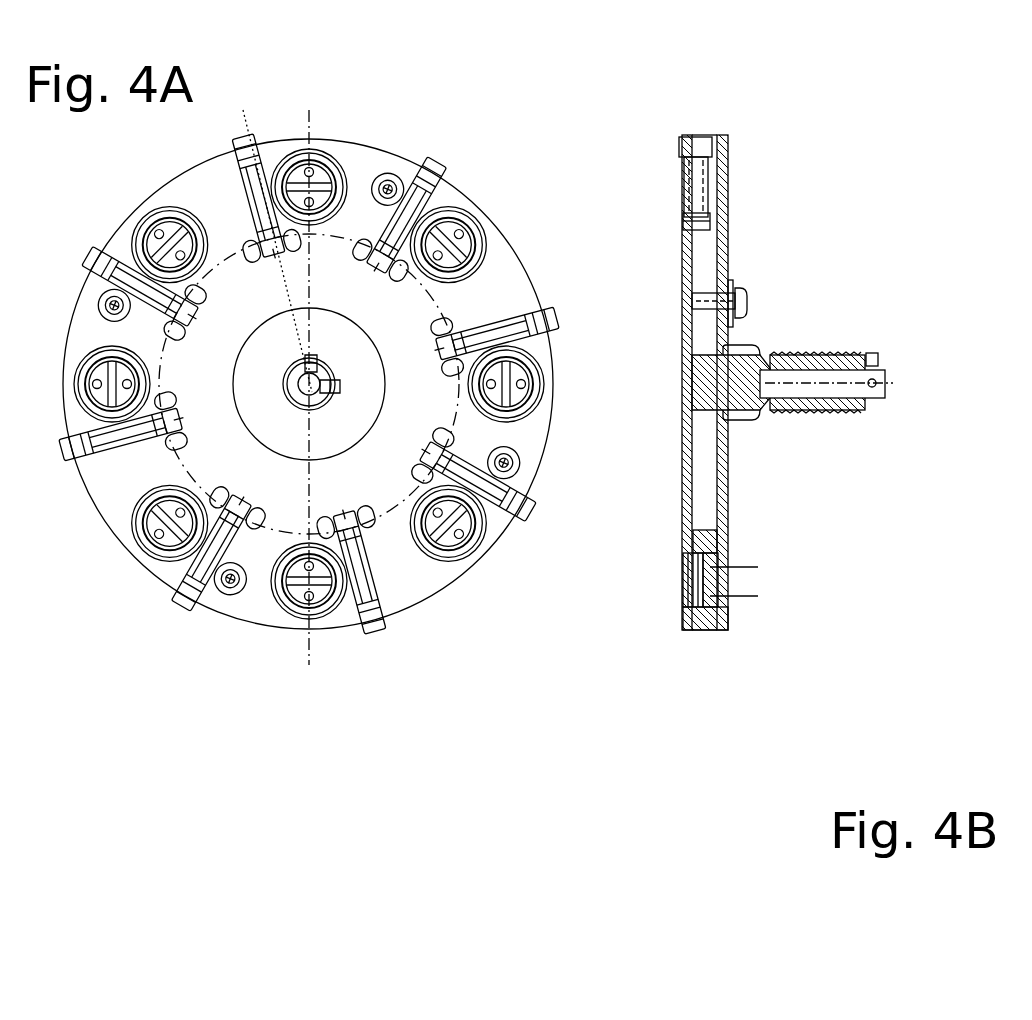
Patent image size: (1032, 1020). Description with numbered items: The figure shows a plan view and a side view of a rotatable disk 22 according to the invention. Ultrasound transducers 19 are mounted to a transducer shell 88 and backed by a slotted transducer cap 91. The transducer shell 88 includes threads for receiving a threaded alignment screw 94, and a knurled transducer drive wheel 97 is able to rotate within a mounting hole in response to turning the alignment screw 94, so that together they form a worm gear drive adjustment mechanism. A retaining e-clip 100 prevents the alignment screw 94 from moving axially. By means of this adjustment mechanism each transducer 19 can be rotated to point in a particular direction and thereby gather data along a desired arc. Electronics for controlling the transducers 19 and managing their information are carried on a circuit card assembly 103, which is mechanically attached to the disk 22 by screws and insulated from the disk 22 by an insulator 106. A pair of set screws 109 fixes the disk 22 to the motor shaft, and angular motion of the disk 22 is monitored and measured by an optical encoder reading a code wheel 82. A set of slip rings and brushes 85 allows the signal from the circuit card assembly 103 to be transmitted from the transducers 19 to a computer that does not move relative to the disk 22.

In FIG. 4A, the ultrasound transducers 19 is at (170, 212).
In FIG. 4B, the ultrasound transducers 19 is at (702, 573).
In FIG. 4A, the disk 22 is at (247, 628).
In FIG. 4B, the disk 22 is at (680, 507).
In FIG. 4B, the code wheel 82 is at (773, 457).
In FIG. 4B, the slip rings and brushes 85 is at (790, 352).
In FIG. 4B, the transducer shell 88 is at (712, 613).
In FIG. 4B, the slotted transducer cap 91 is at (740, 585).
In FIG. 4A, the alignment screw 94 is at (196, 292).
In FIG. 4B, the alignment screw 94 is at (673, 142).
In FIG. 4B, the knurled transducer drive wheel 97 is at (717, 545).
In FIG. 4B, the retaining e-clip 100 is at (675, 212).
In FIG. 4B, the circuit card assembly 103 is at (727, 227).
In FIG. 4B, the insulator 106 is at (730, 170).
In FIG. 4B, the set screws 109 is at (882, 350).